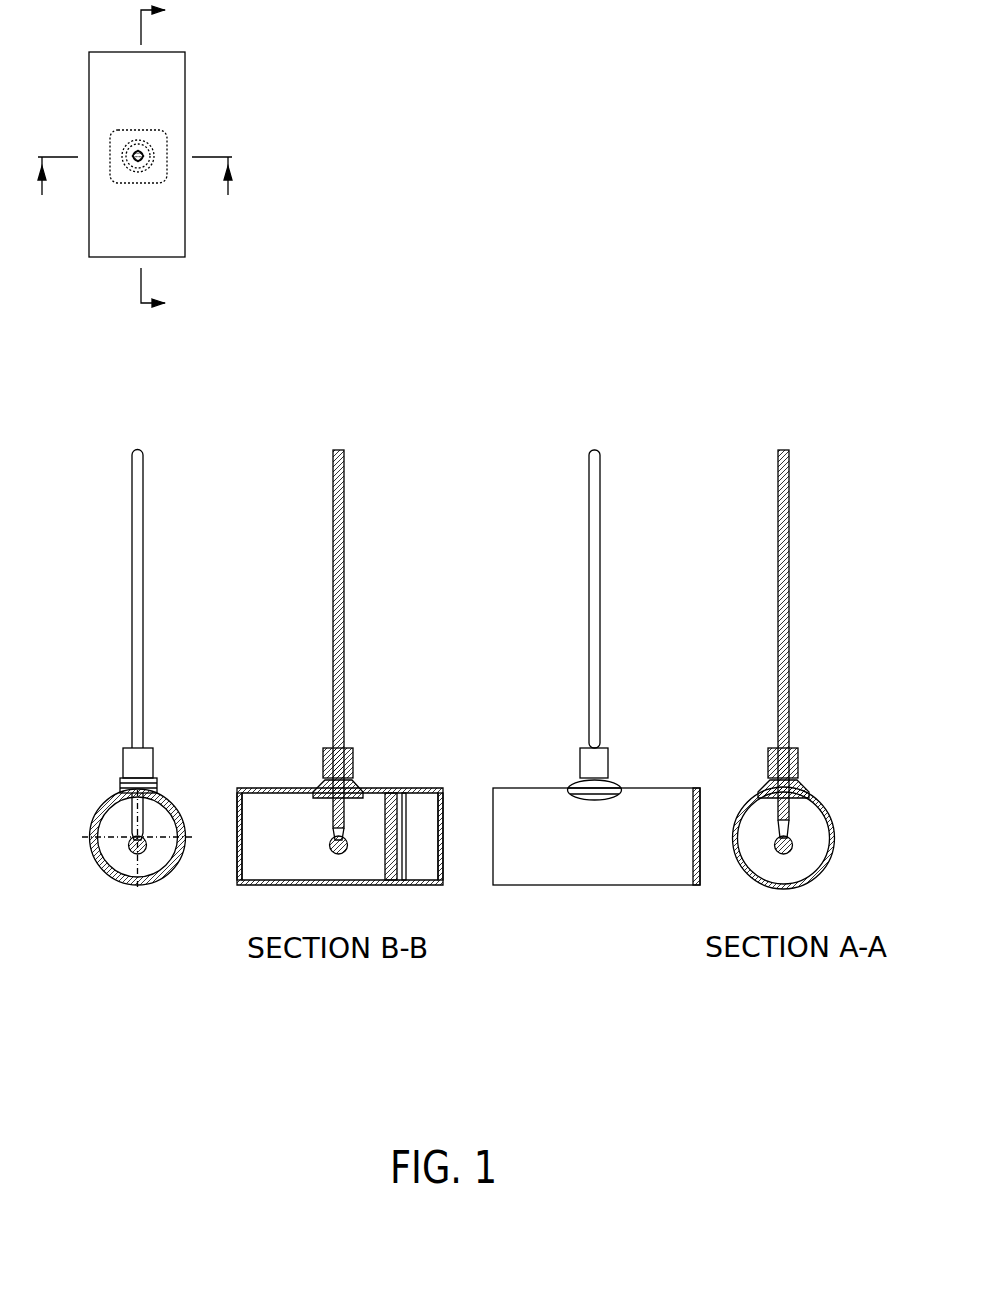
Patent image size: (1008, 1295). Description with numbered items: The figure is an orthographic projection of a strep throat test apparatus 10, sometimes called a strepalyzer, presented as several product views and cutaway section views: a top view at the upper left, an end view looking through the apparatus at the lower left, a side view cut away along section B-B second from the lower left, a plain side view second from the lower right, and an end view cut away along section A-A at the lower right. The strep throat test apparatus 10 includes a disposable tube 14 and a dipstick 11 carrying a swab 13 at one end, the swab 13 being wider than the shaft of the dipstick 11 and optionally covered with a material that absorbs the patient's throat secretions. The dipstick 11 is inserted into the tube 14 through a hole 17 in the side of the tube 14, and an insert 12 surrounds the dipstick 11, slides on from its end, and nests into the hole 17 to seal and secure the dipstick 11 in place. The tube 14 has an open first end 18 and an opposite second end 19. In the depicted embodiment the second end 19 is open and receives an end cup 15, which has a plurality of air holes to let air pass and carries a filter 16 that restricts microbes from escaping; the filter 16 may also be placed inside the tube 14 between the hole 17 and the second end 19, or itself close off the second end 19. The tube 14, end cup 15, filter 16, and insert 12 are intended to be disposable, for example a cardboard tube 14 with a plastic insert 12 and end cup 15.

The strep throat test apparatus 10 is at (520, 76).
The dipstick 11 is at (145, 496).
The insert 12 is at (155, 757).
The swab 13 is at (97, 816).
The disposable tube 14 is at (293, 789).
The end cup 15 is at (423, 798).
The filter 16 is at (412, 842).
The hole 17 is at (125, 830).
The first end 18 is at (258, 838).
The second end 19 is at (423, 838).